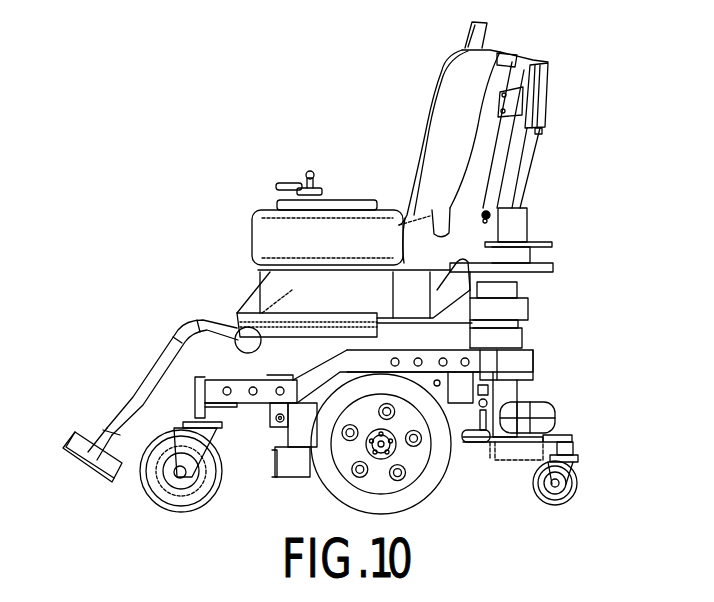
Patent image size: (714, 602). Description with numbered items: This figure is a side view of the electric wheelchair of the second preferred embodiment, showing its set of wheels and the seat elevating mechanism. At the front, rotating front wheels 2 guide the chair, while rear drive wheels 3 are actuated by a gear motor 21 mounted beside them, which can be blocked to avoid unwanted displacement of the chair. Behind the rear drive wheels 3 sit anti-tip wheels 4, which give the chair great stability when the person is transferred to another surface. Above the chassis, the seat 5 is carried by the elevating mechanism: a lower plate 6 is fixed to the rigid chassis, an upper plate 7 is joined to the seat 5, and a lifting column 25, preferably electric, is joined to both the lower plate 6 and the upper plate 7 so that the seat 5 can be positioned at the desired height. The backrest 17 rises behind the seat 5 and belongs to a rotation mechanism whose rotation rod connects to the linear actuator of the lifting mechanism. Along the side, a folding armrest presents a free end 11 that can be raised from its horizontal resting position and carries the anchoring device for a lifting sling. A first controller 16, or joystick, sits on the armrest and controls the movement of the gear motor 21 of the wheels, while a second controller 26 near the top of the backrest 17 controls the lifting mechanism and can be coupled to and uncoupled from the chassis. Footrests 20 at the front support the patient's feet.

The rotating front wheels 2 is at (147, 490).
The rear drive wheels 3 is at (433, 475).
The anti-tip wheels 4 is at (576, 495).
The seat 5 is at (317, 283).
The lower plate 6 is at (502, 442).
The upper plate 7 is at (538, 280).
The free end 11 is at (418, 200).
The first controller 16 is at (285, 182).
The backrest 17 is at (440, 214).
The footrests 20 is at (75, 435).
The gear motor 21 is at (293, 467).
The lifting column 25 is at (505, 388).
The second controller 26 is at (548, 92).